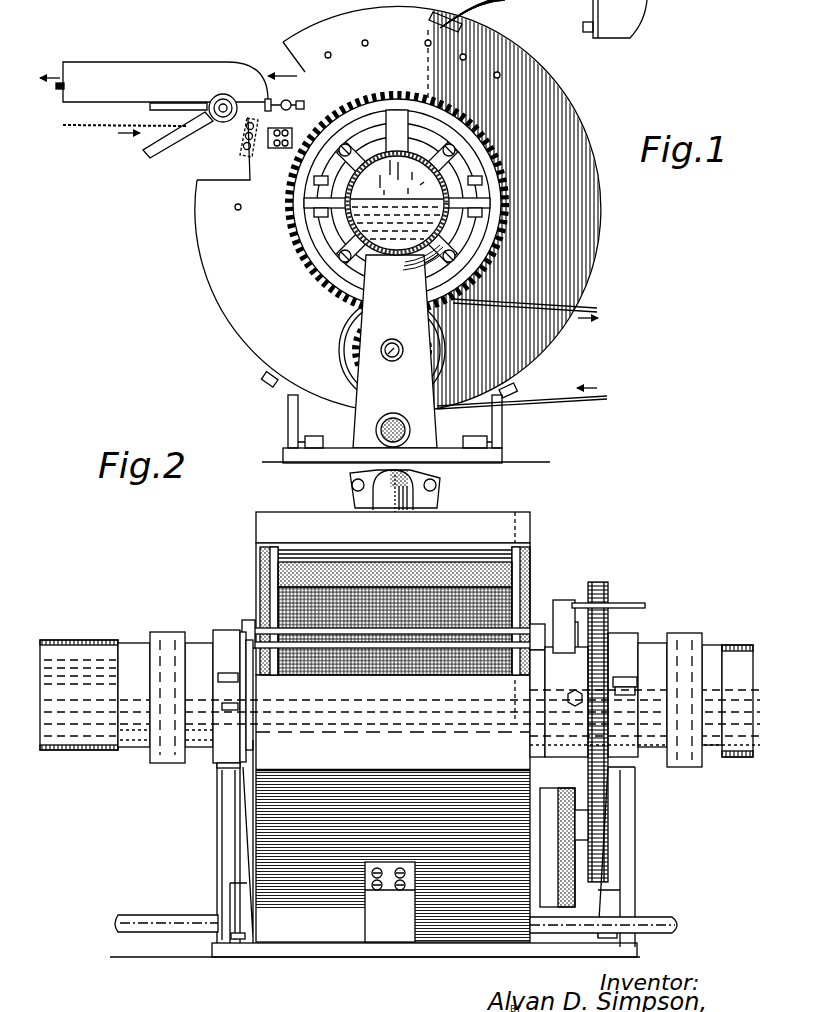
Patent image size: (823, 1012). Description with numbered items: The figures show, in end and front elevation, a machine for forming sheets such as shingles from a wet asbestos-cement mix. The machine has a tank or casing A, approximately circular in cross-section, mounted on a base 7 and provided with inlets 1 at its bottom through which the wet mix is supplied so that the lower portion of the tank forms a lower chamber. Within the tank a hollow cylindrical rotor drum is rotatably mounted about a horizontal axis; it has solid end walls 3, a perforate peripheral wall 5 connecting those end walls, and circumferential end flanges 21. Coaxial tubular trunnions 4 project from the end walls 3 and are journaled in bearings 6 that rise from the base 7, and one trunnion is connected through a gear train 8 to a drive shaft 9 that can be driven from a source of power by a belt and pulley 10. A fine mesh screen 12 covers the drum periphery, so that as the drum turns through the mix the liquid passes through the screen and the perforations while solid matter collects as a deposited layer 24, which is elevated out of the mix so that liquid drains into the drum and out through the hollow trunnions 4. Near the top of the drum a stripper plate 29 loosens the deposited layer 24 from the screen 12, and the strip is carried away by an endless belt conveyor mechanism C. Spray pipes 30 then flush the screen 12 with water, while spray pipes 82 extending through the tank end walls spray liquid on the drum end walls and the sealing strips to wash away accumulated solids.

In FIG. 1, the inlets 1 is at (405, 437).
In FIG. 1, the end walls 3 is at (395, 483).
In FIG. 2, the end walls 3 is at (388, 905).
In FIG. 1, the tubular trunnions 4 is at (371, 100).
In FIG. 2, the tubular trunnions 4 is at (103, 641).
In FIG. 2, the perforate peripheral wall 5 is at (487, 530).
In FIG. 1, the bearings 6 is at (363, 253).
In FIG. 2, the bearings 6 is at (222, 643).
In FIG. 1, the base 7 is at (500, 447).
In FIG. 1, the gear train 8 is at (288, 228).
In FIG. 2, the gear train 8 is at (605, 808).
In FIG. 1, the drive shaft 9 is at (380, 349).
In FIG. 1, the belt and pulley 10 is at (342, 364).
In FIG. 2, the belt and pulley 10 is at (562, 875).
In FIG. 2, the screen 12 is at (503, 595).
In FIG. 2, the circumferential end flanges 21 is at (483, 607).
In FIG. 2, the deposited layer 24 is at (300, 585).
In FIG. 2, the stripper plate 29 is at (512, 565).
In FIG. 1, the spray pipes 30 is at (240, 150).
In FIG. 2, the spray pipes 30 is at (320, 628).
In FIG. 1, the spray pipes 82 is at (296, 101).
In FIG. 2, the spray pipes 82 is at (252, 618).
In FIG. 1, the tank or casing A is at (562, 110).
In FIG. 2, the tank or casing A is at (272, 822).
In FIG. 1, the endless belt conveyor mechanism C is at (152, 50).